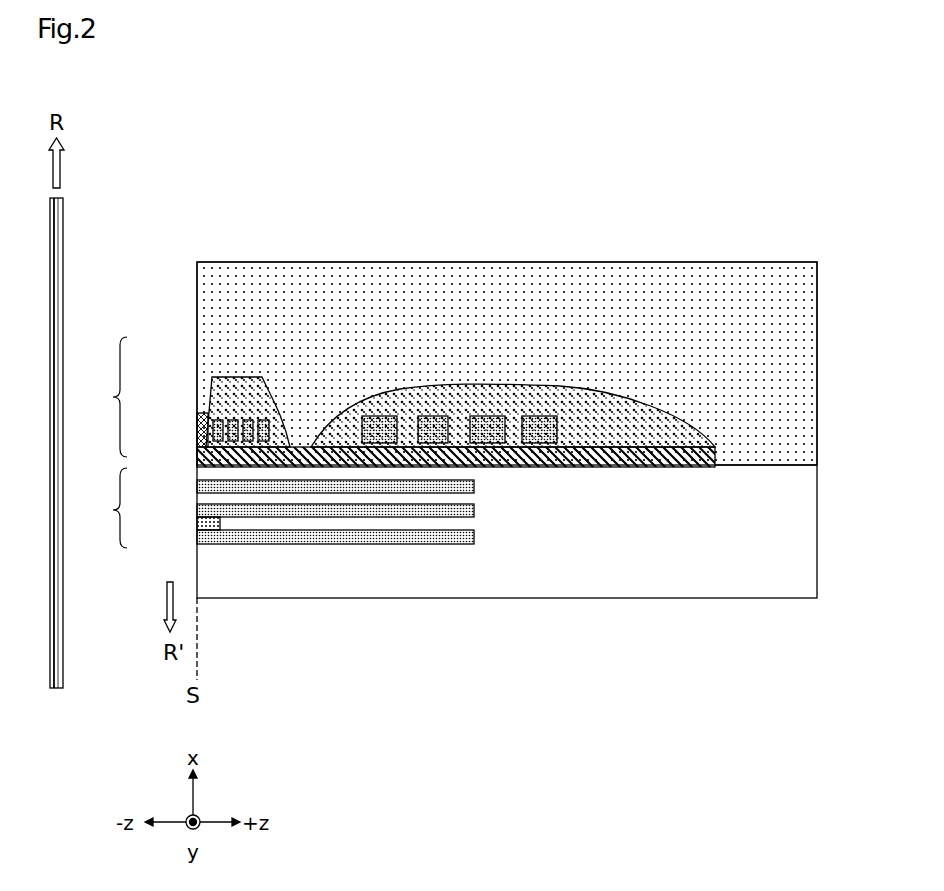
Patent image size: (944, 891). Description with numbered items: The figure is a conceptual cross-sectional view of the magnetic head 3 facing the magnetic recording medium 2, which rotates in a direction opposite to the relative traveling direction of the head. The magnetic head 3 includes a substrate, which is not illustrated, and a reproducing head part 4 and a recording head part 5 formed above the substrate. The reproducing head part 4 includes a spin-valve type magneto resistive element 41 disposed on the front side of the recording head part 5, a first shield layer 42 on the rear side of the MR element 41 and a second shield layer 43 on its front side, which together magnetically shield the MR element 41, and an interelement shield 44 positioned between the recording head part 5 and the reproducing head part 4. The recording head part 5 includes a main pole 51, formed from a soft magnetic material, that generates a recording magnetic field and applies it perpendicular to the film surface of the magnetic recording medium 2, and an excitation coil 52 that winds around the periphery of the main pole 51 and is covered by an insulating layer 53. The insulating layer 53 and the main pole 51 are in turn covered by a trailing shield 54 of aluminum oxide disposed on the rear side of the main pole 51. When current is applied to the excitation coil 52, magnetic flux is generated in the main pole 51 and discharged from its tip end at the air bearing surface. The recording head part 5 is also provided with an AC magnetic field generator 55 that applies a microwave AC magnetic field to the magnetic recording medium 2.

The magnetic recording medium 2 is at (62, 693).
The magnetic head 3 is at (440, 249).
The reproducing head part 4 is at (113, 508).
The recording head part 5 is at (114, 397).
The magneto resistive (MR) element 41 is at (197, 523).
The first shield layer 42 is at (197, 510).
The second shield layer 43 is at (197, 538).
The interelement shield 44 is at (197, 484).
The main pole 51 is at (197, 459).
The excitation coil 52 is at (233, 425).
The insulating layer 53 is at (265, 393).
The trailing shield 54 is at (197, 362).
The AC magnetic field generator 55 is at (197, 432).